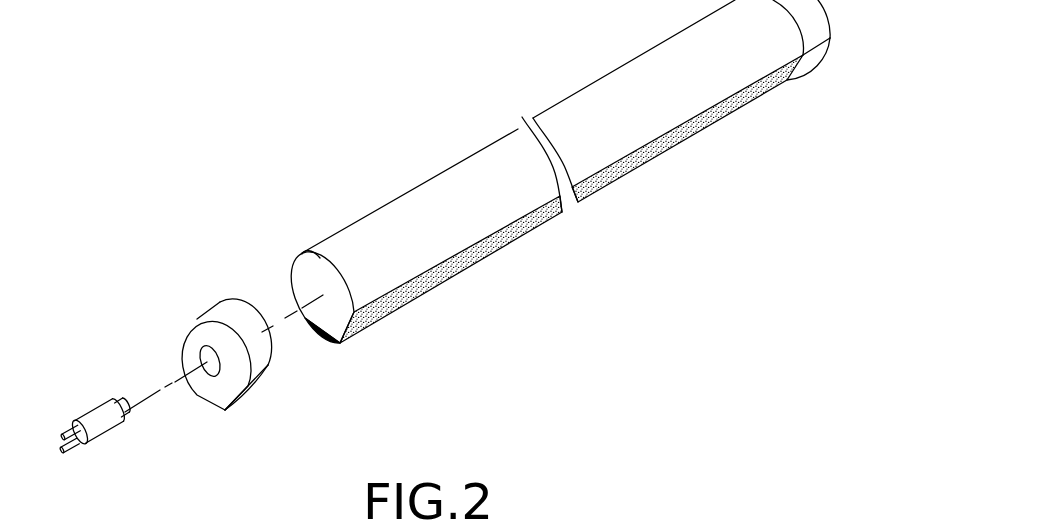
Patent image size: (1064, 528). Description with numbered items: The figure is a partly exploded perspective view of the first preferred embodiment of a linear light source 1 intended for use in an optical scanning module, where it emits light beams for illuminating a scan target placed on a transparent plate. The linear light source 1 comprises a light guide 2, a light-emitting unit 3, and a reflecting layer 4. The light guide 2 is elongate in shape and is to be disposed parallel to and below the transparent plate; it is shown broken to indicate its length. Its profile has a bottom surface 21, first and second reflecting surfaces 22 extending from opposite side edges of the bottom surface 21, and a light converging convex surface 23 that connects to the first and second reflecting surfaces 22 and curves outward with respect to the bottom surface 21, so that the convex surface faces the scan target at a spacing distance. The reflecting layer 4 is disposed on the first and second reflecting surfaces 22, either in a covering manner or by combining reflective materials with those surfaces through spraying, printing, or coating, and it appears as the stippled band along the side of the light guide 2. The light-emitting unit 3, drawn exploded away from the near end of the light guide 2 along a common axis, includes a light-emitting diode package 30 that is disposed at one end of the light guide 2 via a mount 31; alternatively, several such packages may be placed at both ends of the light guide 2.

The linear light source 1 is at (393, 166).
The light guide 2 is at (493, 167).
The bottom surface 21 is at (323, 335).
The first and second reflecting surfaces 22 is at (293, 288).
The light converging convex surface 23 is at (322, 258).
The light-emitting unit 3 is at (152, 396).
The light-emitting diode (LED) package 30 is at (105, 427).
The mount 31 is at (227, 388).
The reflecting layer 4 is at (433, 273).